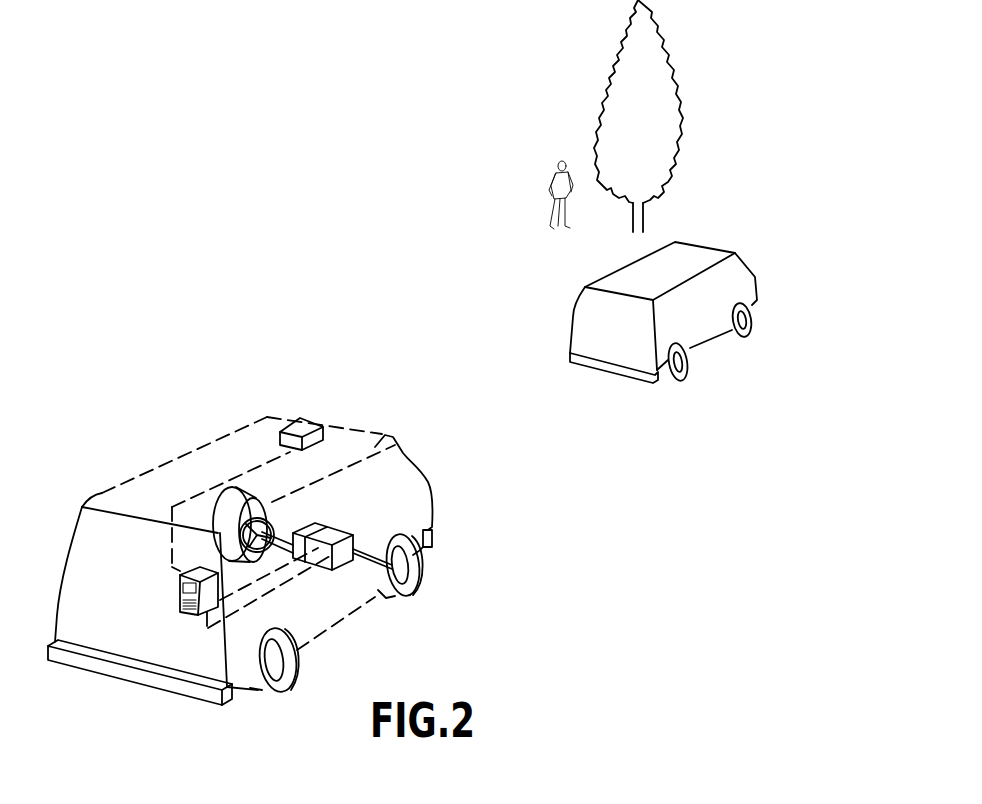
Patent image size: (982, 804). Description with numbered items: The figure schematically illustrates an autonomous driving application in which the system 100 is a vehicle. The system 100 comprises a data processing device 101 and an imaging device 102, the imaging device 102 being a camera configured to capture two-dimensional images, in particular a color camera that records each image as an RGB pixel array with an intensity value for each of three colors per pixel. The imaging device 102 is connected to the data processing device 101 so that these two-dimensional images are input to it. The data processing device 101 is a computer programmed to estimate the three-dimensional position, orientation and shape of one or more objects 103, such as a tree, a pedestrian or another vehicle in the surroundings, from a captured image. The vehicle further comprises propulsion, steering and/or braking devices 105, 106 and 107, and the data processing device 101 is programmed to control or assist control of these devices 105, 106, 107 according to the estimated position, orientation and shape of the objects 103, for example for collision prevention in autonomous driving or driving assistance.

The system 100 is at (150, 398).
The data processing device 101 is at (180, 593).
The imaging device 102 is at (298, 418).
The object 103 is at (550, 175).
The propulsion device 105 is at (340, 535).
The steering device 106 is at (313, 523).
The braking device 107 is at (258, 497).